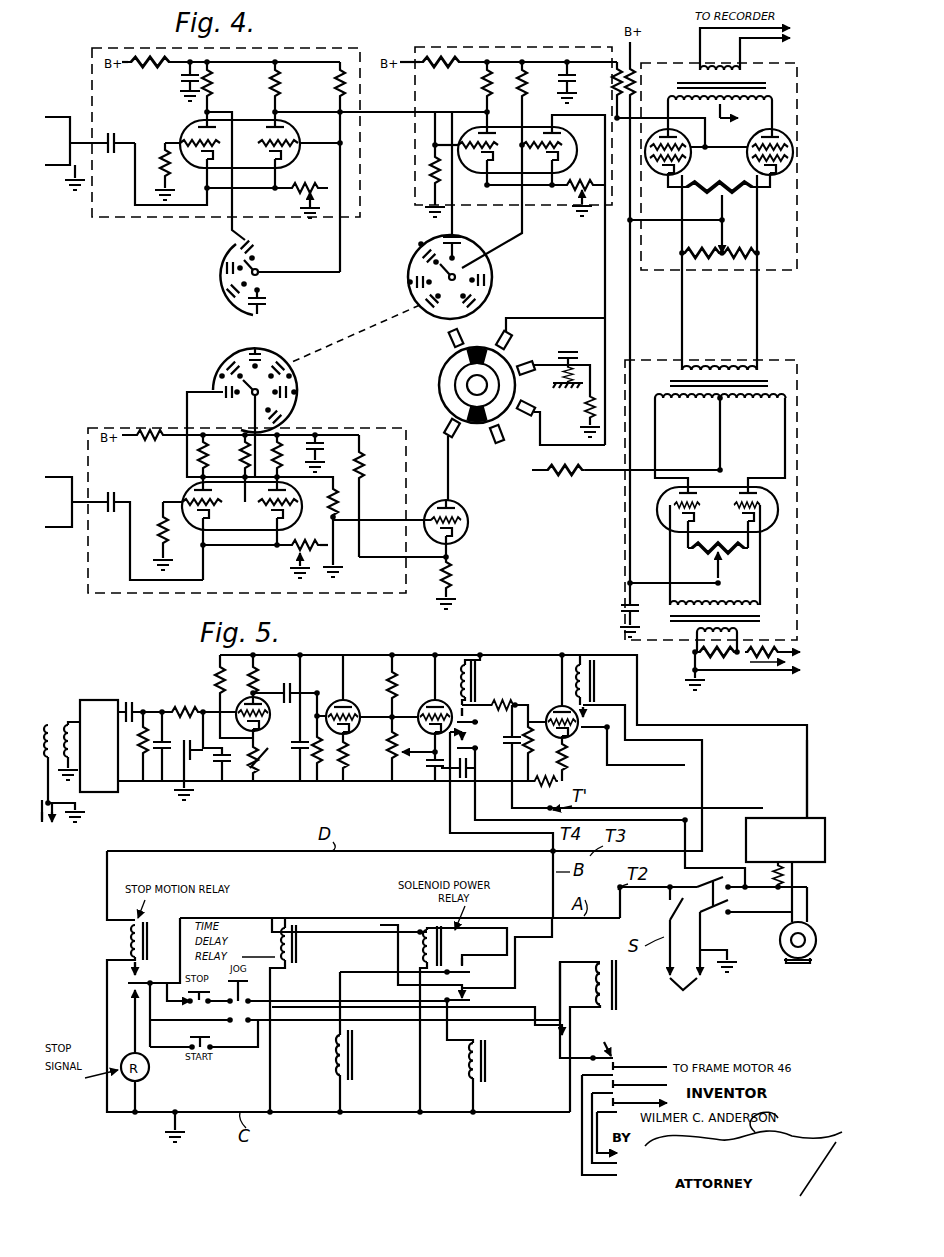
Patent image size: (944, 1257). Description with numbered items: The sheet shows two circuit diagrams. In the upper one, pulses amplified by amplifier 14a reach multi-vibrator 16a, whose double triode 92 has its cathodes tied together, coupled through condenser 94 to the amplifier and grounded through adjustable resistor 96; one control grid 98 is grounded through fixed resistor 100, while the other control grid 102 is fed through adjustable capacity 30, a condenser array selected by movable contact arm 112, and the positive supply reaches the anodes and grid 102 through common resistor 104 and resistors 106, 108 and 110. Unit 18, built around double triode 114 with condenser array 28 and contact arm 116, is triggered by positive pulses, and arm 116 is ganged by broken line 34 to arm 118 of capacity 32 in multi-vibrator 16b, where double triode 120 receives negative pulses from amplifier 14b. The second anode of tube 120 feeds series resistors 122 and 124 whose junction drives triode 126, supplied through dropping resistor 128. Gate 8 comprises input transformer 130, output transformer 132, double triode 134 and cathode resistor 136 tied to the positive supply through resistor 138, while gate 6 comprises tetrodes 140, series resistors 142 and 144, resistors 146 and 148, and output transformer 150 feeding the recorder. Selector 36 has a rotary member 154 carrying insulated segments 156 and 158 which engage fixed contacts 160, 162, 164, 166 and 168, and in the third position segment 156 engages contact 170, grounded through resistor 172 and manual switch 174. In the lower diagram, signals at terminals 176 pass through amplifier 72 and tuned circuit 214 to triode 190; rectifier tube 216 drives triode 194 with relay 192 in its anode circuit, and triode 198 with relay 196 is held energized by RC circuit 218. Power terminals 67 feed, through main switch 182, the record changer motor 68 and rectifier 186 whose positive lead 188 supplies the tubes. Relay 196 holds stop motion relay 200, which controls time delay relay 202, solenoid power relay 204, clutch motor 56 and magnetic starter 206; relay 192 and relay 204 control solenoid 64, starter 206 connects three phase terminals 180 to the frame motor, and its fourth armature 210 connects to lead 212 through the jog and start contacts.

In FIG. 4, the amplifier 14a is at (52, 116).
In FIG. 4, the multi-vibrator 16a is at (104, 48).
In FIG. 4, the condenser 94 is at (113, 130).
In FIG. 4, the control grid 98 is at (195, 140).
In FIG. 4, the fixed resistor 100 is at (160, 150).
In FIG. 4, the common resistor 104 is at (172, 68).
In FIG. 4, the resistor 106 is at (212, 88).
In FIG. 4, the double triode 92 is at (239, 126).
In FIG. 4, the resistor 108 is at (280, 92).
In FIG. 4, the control grid 102 is at (282, 138).
In FIG. 4, the adjustable resistor 96 is at (314, 186).
In FIG. 4, the resistor 110 is at (344, 90).
In FIG. 4, the movable contact arm 112 is at (258, 270).
In FIG. 4, the adjustable capacity 30 is at (252, 275).
In FIG. 4, the resistor 144 is at (440, 58).
In FIG. 4, the resistor 148 is at (524, 72).
In FIG. 4, the resistor 146 is at (484, 80).
In FIG. 4, the resistor 142 is at (595, 58).
In FIG. 4, the resistor 138 is at (618, 62).
In FIG. 4, the output transformer 150 is at (676, 86).
In FIG. 4, the tetrodes 140 is at (752, 165).
In FIG. 4, the gate 6 is at (790, 270).
In FIG. 4, the double triode 114 is at (568, 146).
In FIG. 4, the multi-vibrator unit 18 is at (415, 190).
In FIG. 4, the movable contact arm 116 is at (466, 270).
In FIG. 4, the adjustable capacity 28 is at (470, 277).
In FIG. 4, the broken line 34 is at (325, 345).
In FIG. 4, the fixed contact 164 is at (513, 330).
In FIG. 4, the fixed contact 170 is at (560, 320).
In FIG. 4, the manually operated switch 174 is at (590, 338).
In FIG. 4, the fixed contact strip 162 is at (448, 336).
In FIG. 4, the arcuate conducting segment 158 is at (455, 368).
In FIG. 4, the arcuate conducting segment 156 is at (505, 348).
In FIG. 4, the selector 36 is at (485, 409).
In FIG. 4, the rotary member 154 is at (460, 390).
In FIG. 4, the short fixed contact 168 is at (532, 406).
In FIG. 4, the fixed contact 166 is at (446, 425).
In FIG. 4, the resistor 172 is at (572, 412).
In FIG. 4, the fixed contact strip 160 is at (493, 443).
In FIG. 4, the adjustable capacity 32 is at (223, 412).
In FIG. 4, the contact arm 118 is at (247, 402).
In FIG. 4, the multi-vibrator circuit 16b is at (106, 428).
In FIG. 4, the amplifier 14b is at (58, 476).
In FIG. 4, the double triode 120 is at (184, 498).
In FIG. 4, the resistor 122 is at (345, 500).
In FIG. 4, the resistor 124 is at (340, 568).
In FIG. 4, the triode 126 is at (470, 524).
In FIG. 4, the dropping resistor 128 is at (562, 476).
In FIG. 4, the output transformer 132 is at (768, 382).
In FIG. 4, the double triode 134 is at (778, 526).
In FIG. 4, the resistor 136 is at (732, 550).
In FIG. 4, the input transformer 130 is at (762, 620).
In FIG. 4, the gate 8 is at (625, 545).
In FIG. 5, the amplifier 72 is at (112, 754).
In FIG. 5, the terminals 176 is at (48, 828).
In FIG. 5, the tuned circuit 214 is at (200, 768).
In FIG. 5, the triode 190 is at (238, 706).
In FIG. 5, the rectifier tube 216 is at (350, 700).
In FIG. 5, the triode 194 is at (430, 703).
In FIG. 5, the relay 192 is at (463, 664).
In FIG. 5, the RC circuit 218 is at (476, 772).
In FIG. 5, the triode 198 is at (552, 708).
In FIG. 5, the relay 196 is at (582, 664).
In FIG. 5, the rectifier and filter 186 is at (772, 818).
In FIG. 5, the positive potential output lead 188 is at (807, 758).
In FIG. 5, the main switch 182 is at (706, 920).
In FIG. 5, the terminals 67 is at (687, 996).
In FIG. 5, the record changer motor 68 is at (788, 964).
In FIG. 5, the stop motion relay 200 is at (130, 940).
In FIG. 5, the time delay relay 202 is at (290, 925).
In FIG. 5, the solenoid power relay 204 is at (418, 936).
In FIG. 5, the clutch motor 56 is at (338, 1058).
In FIG. 5, the lead 212 is at (334, 1040).
In FIG. 5, the solenoid 64 is at (478, 1082).
In FIG. 5, the magnetic starter 206 is at (612, 1012).
In FIG. 5, the fourth armature 210 is at (617, 1058).
In FIG. 5, the terminals 180 is at (600, 1168).